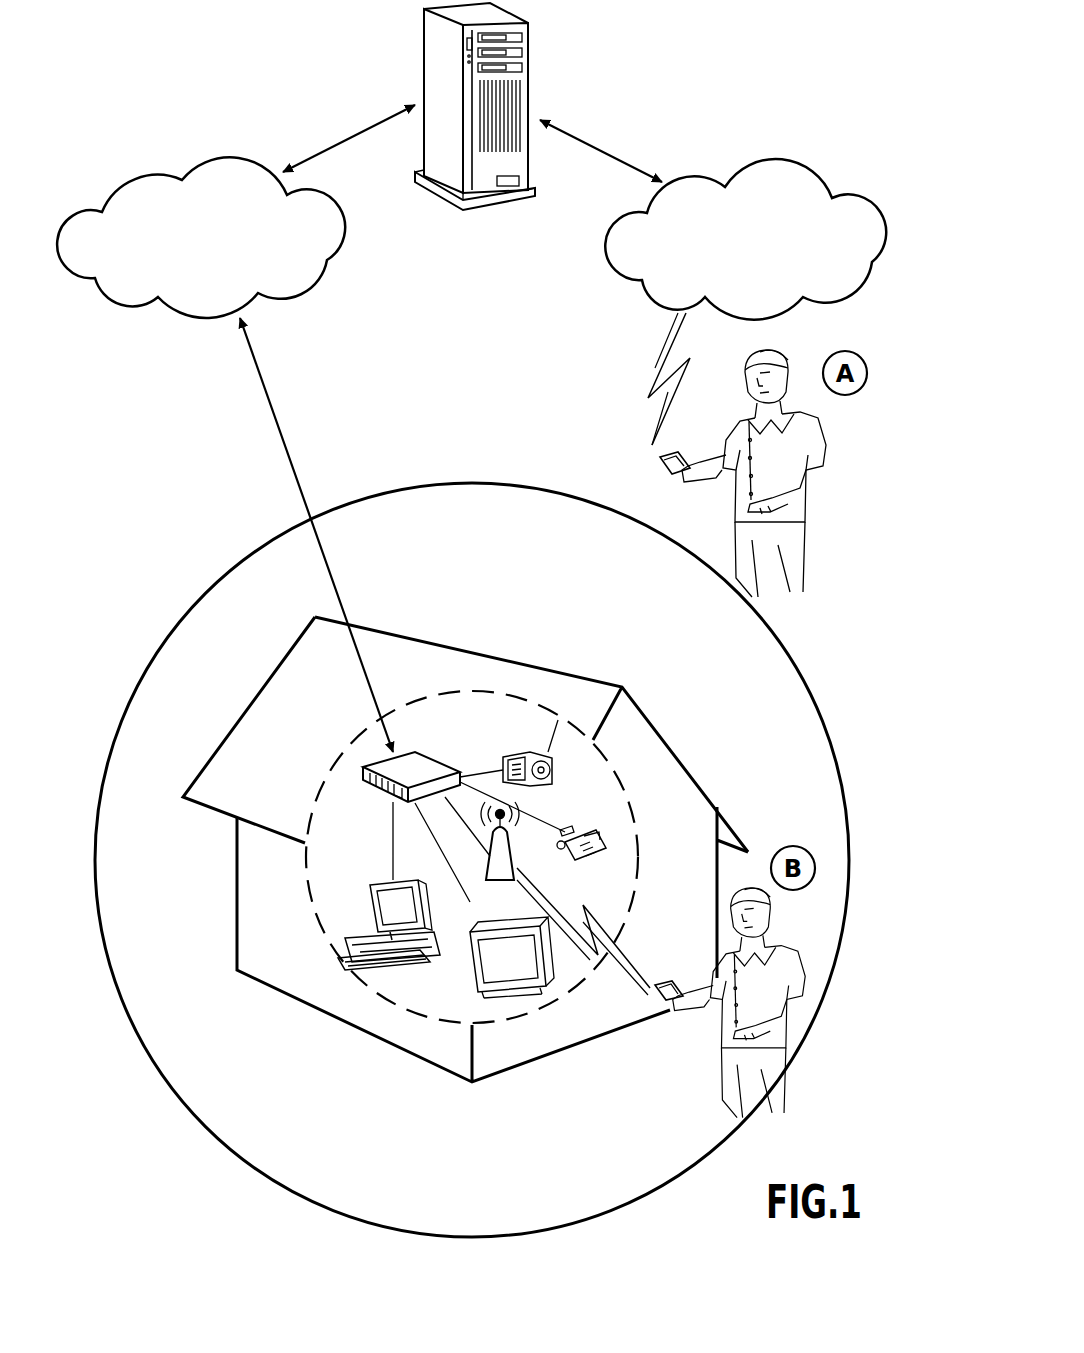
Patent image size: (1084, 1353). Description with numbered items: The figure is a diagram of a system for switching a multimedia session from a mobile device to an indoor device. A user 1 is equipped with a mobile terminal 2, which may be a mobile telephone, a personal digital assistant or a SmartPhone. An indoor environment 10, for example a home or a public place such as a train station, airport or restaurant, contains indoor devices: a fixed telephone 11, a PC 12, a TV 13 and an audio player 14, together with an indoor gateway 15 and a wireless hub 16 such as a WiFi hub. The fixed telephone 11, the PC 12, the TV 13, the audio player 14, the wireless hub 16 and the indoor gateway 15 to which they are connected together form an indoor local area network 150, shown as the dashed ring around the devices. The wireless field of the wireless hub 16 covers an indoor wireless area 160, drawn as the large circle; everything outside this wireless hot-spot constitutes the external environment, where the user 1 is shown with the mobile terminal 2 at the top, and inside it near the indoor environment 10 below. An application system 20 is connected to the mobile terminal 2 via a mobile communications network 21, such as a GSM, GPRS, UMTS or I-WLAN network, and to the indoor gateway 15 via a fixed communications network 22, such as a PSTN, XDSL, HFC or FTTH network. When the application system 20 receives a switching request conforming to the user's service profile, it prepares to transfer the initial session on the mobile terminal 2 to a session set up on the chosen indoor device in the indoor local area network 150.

The user 1 is at (795, 355).
The mobile terminal 2 is at (672, 457).
The indoor environment 10 is at (556, 668).
The fixed telephone 11 is at (590, 828).
The PC 12 is at (380, 893).
The TV 13 is at (478, 976).
The audio player 14 is at (514, 752).
The indoor gateway 15 is at (429, 762).
The wireless hub 16 is at (506, 854).
The application system 20 is at (534, 70).
The mobile communications network 21 is at (737, 250).
The fixed communications network 22 is at (203, 258).
The indoor local area network 150 is at (640, 828).
The indoor wireless area 160 is at (810, 690).